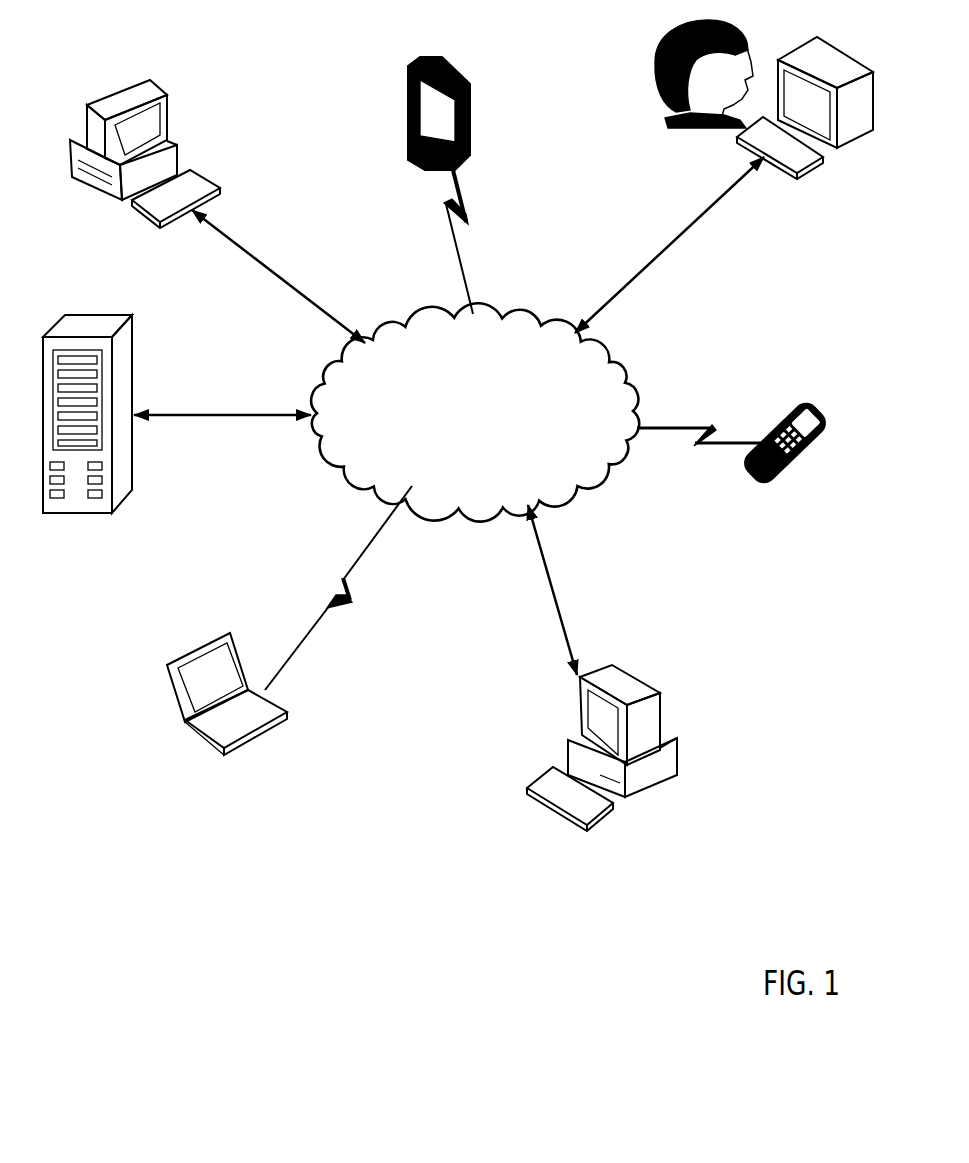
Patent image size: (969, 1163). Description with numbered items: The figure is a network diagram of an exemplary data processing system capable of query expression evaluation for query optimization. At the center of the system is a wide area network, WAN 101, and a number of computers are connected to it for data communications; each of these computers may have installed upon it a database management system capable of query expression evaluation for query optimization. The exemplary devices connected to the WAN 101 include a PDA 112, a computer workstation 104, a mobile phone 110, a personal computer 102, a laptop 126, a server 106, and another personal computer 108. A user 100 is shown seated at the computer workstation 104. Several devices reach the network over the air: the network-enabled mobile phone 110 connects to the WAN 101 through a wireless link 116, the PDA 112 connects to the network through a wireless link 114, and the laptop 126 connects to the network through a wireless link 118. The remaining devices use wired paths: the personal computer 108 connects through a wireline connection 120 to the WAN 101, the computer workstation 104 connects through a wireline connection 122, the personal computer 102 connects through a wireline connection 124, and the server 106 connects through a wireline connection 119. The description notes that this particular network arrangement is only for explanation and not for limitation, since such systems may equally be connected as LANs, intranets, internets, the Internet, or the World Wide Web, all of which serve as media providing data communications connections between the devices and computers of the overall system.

The user 100 is at (625, 101).
The wide area network 101 is at (517, 423).
The personal computer 102 is at (635, 891).
The computer workstation 104 is at (846, 230).
The server 106 is at (127, 545).
The personal computer 108 is at (203, 95).
The mobile phone 110 is at (770, 423).
The PDA 112 is at (458, 50).
The wireless link 114 is at (525, 221).
The wireless link 116 is at (782, 518).
The wireless link 118 is at (313, 611).
The wireline connection 119 is at (240, 456).
The wireline connection 120 is at (297, 258).
The wireline connection 122 is at (690, 286).
The wireline connection 124 is at (547, 633).
The laptop 126 is at (280, 773).